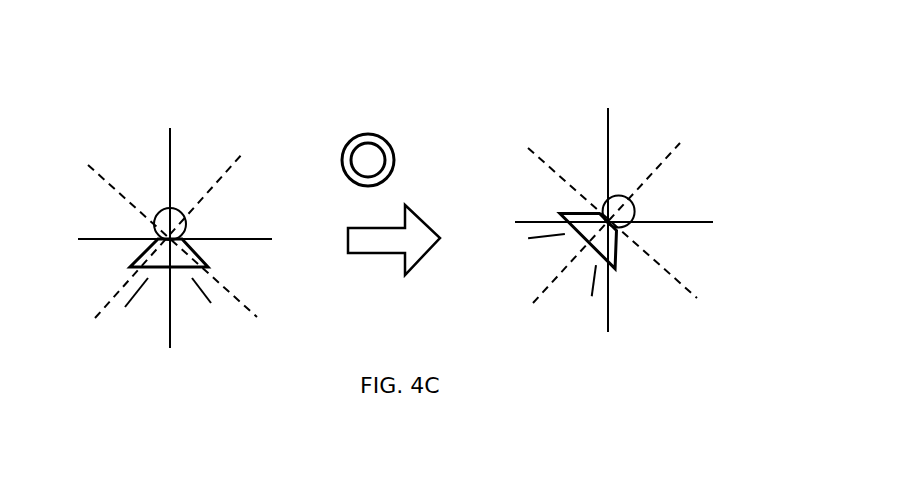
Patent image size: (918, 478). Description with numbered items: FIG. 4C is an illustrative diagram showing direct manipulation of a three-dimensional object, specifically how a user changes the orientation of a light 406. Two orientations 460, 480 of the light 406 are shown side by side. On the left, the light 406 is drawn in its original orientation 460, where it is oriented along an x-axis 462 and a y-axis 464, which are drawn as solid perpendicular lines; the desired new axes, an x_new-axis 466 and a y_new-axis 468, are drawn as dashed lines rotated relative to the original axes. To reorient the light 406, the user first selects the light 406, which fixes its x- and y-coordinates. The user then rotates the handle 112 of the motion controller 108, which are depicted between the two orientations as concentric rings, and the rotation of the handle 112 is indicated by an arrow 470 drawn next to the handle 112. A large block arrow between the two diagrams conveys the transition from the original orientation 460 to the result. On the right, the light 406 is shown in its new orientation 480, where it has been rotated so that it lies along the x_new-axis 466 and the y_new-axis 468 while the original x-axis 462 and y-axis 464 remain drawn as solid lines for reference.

The orientation 460 is at (118, 100).
The orientation 480 is at (568, 98).
The y-axis 464 is at (170, 154).
The x-axis 462 is at (262, 239).
The y_new-axis 468 is at (236, 164).
The x_new-axis 466 is at (246, 302).
The light 406 is at (132, 267).
The motion controller 108 is at (372, 134).
The handle 112 is at (386, 160).
The arrow 470 is at (398, 196).